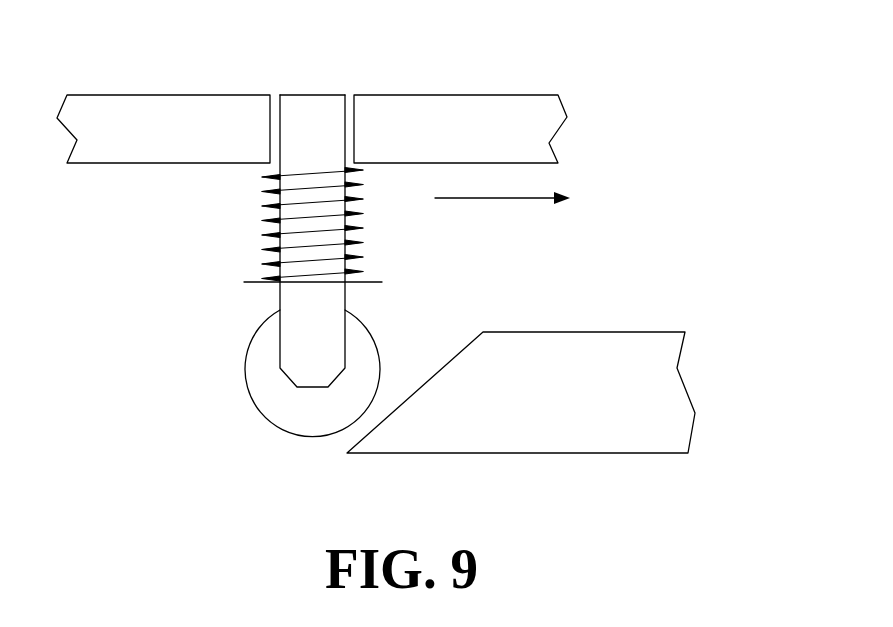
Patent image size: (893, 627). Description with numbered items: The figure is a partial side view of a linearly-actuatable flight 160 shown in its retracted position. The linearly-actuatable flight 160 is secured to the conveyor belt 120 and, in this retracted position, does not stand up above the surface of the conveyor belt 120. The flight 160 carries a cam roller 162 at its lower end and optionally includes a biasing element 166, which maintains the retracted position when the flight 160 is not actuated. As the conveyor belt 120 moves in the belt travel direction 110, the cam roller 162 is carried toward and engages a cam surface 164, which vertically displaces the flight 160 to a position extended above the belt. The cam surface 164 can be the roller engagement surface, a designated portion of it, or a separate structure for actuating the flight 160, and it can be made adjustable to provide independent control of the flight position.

The belt travel direction 110 is at (514, 202).
The conveyor belt 120 is at (492, 118).
The linearly-actuatable flight 160 is at (322, 120).
The cam roller 162 is at (263, 373).
The cam surface 164 is at (548, 328).
The biasing element 166 is at (263, 219).